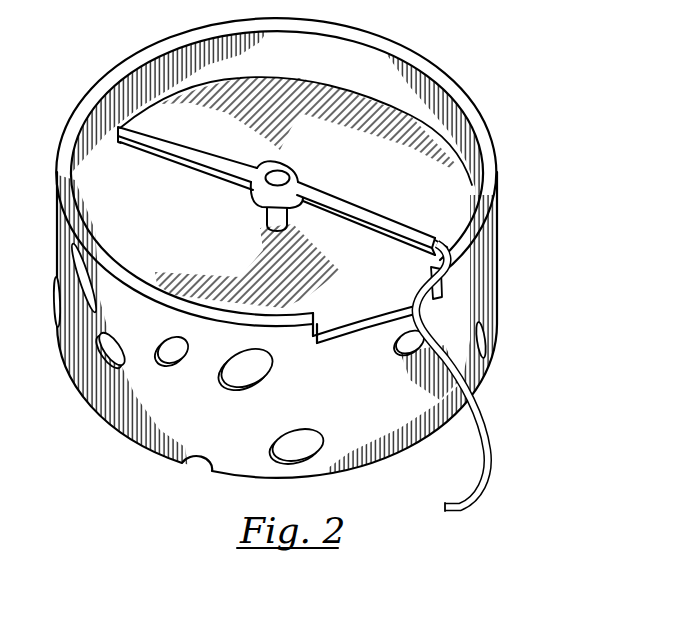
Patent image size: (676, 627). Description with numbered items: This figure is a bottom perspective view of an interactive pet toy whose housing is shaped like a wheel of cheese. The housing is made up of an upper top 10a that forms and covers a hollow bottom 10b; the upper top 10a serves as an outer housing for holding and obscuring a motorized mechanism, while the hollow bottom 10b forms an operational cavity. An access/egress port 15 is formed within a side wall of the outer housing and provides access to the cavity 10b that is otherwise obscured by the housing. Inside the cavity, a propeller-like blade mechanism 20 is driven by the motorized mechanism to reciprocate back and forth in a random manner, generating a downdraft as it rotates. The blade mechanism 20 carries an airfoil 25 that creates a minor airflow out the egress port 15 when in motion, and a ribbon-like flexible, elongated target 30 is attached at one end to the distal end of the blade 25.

The upper top 10a is at (150, 447).
The hollow bottom 10b is at (390, 143).
The access/egress port 15 is at (442, 294).
The propeller-like blade mechanism 20 is at (140, 128).
The airfoil 25 is at (437, 236).
The flexible elongated target 30 is at (489, 448).